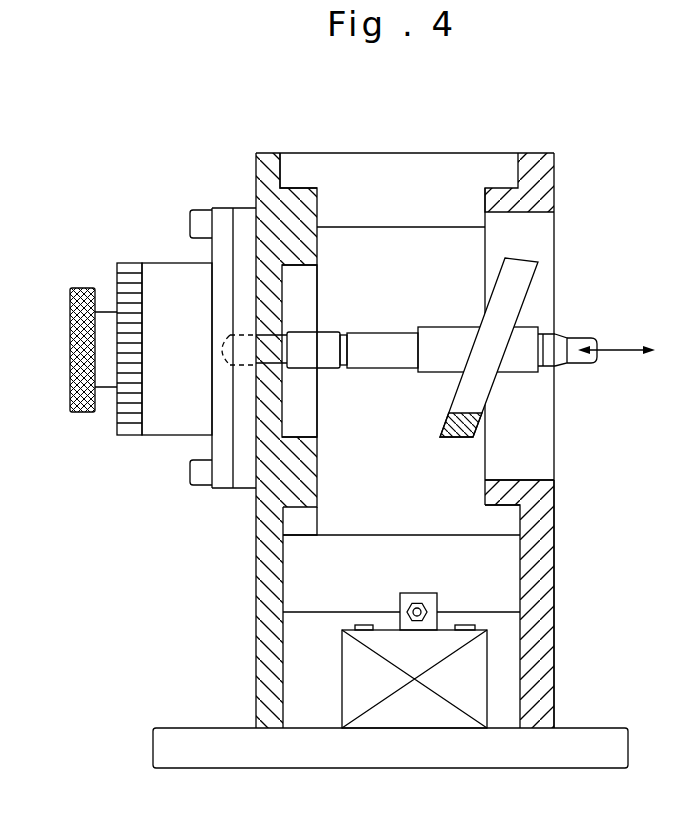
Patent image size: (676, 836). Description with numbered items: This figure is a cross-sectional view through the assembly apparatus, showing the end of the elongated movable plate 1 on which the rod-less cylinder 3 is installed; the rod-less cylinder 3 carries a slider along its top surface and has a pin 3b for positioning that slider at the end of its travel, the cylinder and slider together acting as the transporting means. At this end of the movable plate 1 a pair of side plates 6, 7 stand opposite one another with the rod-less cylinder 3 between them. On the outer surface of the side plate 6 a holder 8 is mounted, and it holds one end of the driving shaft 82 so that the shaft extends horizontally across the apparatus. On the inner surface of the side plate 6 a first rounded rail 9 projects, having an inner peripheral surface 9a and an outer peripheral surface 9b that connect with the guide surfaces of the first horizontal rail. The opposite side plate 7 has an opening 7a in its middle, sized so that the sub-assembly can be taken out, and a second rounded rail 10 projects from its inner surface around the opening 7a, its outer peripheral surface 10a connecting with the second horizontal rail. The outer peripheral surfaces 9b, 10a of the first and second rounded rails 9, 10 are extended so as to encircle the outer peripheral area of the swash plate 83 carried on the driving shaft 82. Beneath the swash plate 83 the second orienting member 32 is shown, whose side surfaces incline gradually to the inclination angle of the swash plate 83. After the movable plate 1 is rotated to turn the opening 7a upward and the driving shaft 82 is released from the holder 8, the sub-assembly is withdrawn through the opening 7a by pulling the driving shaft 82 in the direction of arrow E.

The movable plate 1 is at (182, 745).
The rod-less cylinder 3 is at (413, 712).
The pin 3b is at (433, 598).
The side plate 6 is at (258, 610).
The side plate 7 is at (546, 660).
The opening 7a is at (548, 478).
The holder 8 is at (105, 345).
The first rounded rail 9 is at (292, 170).
The inner peripheral surface 9a is at (318, 282).
The outer peripheral surface 9b is at (318, 184).
The second rounded rail 10 is at (499, 170).
The outer peripheral surface 10a is at (520, 184).
The second orienting member 32 is at (447, 438).
The driving shaft 82 is at (522, 364).
The swash plate 83 is at (522, 266).